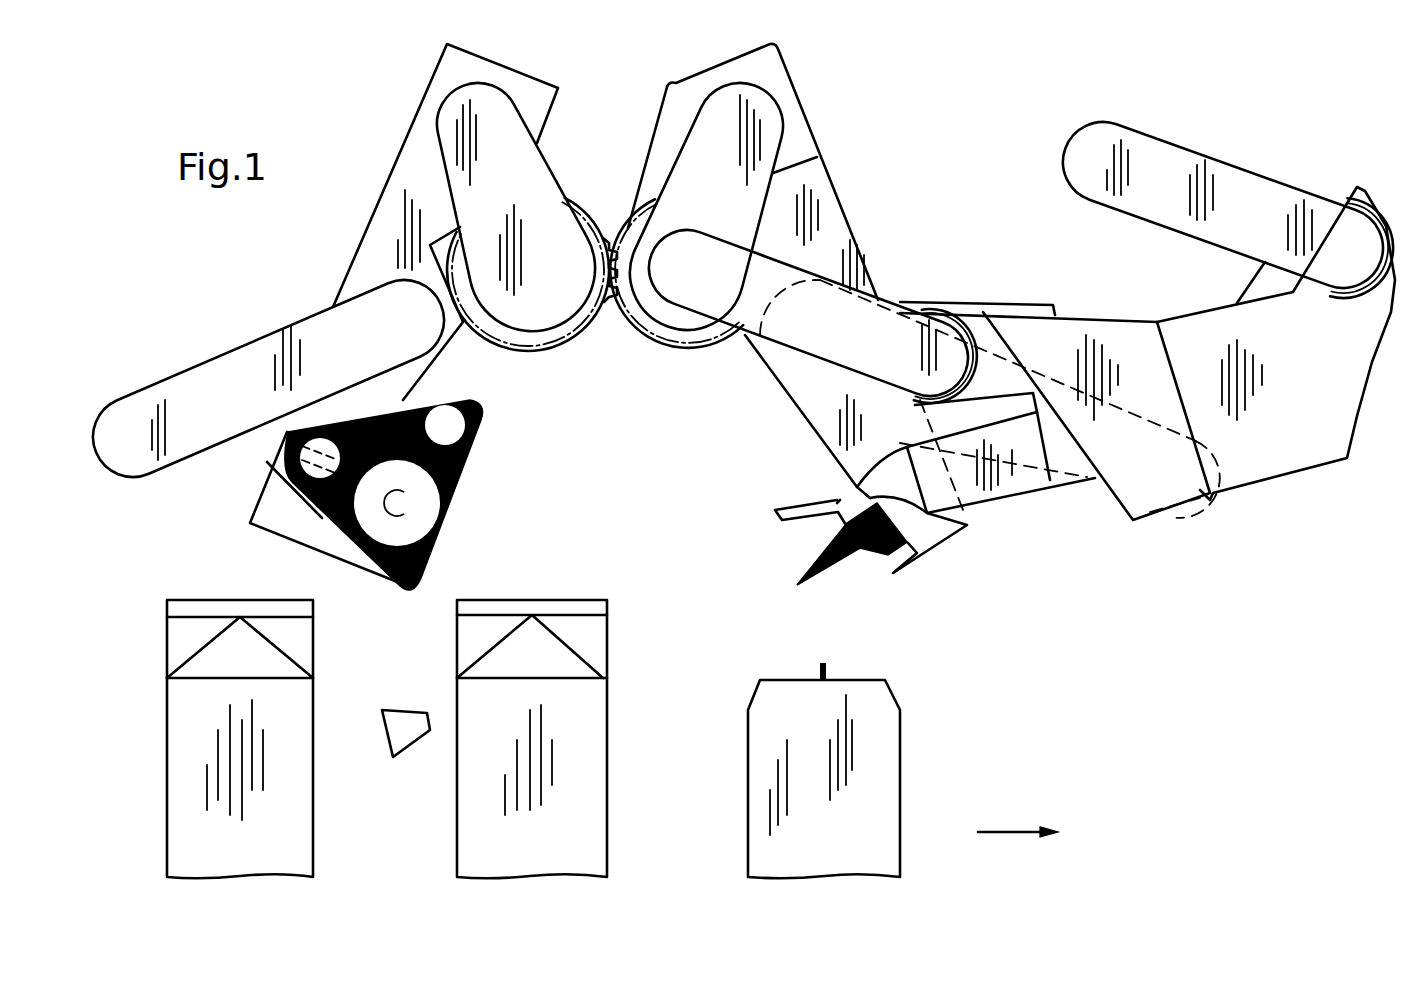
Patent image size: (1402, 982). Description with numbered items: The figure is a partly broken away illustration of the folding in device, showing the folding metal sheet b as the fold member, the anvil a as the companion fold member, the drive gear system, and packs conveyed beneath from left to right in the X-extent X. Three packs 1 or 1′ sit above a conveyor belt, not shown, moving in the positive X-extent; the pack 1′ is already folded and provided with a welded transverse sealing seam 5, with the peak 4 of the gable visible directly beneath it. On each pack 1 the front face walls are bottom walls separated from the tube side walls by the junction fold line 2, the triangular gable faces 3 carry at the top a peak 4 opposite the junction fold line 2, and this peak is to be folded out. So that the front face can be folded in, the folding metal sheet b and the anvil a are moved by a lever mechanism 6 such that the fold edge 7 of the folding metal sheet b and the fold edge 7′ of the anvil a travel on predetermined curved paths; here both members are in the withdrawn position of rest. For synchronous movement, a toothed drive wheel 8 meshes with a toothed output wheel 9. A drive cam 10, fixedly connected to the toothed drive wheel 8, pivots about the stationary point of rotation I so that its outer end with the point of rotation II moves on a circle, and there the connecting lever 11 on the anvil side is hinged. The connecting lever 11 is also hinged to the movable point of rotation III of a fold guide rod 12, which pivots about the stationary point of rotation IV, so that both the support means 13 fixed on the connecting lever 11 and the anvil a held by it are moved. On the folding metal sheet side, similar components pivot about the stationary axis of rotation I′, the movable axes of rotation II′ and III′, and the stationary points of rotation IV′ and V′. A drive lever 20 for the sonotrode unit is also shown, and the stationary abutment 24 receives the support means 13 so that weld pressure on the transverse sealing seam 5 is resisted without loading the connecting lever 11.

The pack 1 is at (300, 716).
The pack 1′ is at (887, 761).
The junction fold line 2 is at (192, 679).
The triangular gable faces 3 is at (237, 668).
The peak 4 is at (238, 618).
The transverse sealing seam 5 is at (820, 666).
The lever mechanism 6 is at (849, 197).
The fold edge 7 is at (797, 585).
The fold edge 7′ is at (420, 582).
The toothed drive wheel 8 is at (557, 340).
The toothed output wheel 9 is at (652, 340).
The drive cam 10 is at (527, 178).
The connecting lever 11 is at (405, 192).
The fold guide rod 12 is at (258, 358).
The support means 13 is at (290, 470).
The drive lever 20 is at (1272, 200).
The stationary abutment 24 is at (398, 737).
The anvil a is at (467, 480).
The folding metal sheet b is at (843, 556).
The X-extent X is at (1005, 832).
The stationary point of rotation I is at (532, 273).
The point of rotation II is at (480, 130).
The movable point of rotation III is at (397, 327).
The stationary point of rotation IV is at (133, 442).
The stationary axis of rotation I′ is at (687, 273).
The movable axis of rotation II′ is at (740, 130).
The movable axis of rotation III′ is at (817, 323).
The stationary point of rotation IV′ is at (1178, 482).
The stationary point of rotation V′ is at (1102, 165).